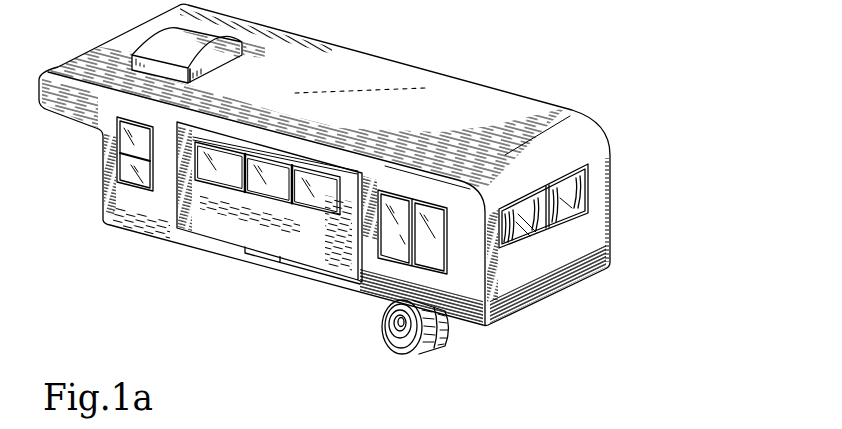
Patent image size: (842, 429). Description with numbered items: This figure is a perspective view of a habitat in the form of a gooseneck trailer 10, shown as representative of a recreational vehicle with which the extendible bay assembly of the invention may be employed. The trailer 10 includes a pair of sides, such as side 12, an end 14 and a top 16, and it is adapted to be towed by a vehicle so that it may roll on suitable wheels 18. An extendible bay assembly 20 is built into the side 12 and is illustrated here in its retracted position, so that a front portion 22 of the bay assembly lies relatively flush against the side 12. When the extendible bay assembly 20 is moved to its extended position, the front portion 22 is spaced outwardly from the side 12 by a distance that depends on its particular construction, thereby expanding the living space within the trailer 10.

The gooseneck trailer 10 is at (357, 187).
The side 12 is at (153, 210).
The end 14 is at (590, 232).
The top 16 is at (370, 78).
The wheels 18 is at (398, 338).
The extendible bay assembly 20 is at (233, 223).
The front portion 22 is at (313, 252).